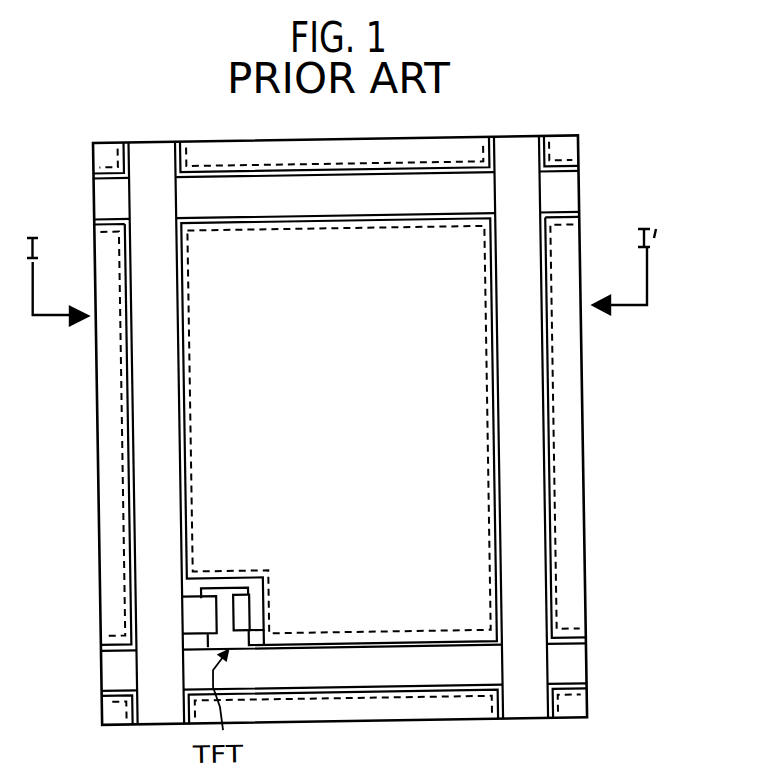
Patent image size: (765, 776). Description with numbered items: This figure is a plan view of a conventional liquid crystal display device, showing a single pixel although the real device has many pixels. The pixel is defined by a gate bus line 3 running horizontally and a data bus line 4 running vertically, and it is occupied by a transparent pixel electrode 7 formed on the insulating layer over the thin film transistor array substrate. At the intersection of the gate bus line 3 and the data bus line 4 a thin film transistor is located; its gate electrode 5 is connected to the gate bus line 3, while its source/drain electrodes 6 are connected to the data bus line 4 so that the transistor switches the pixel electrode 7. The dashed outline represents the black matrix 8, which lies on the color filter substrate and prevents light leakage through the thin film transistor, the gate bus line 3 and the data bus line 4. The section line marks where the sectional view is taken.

The gate bus line 3 is at (471, 528).
The data bus line 4 is at (139, 459).
The gate electrode 5 is at (229, 534).
The source/drain electrodes 6 is at (278, 583).
The transparent pixel electrode 7 is at (362, 311).
The black matrix 8 is at (390, 227).